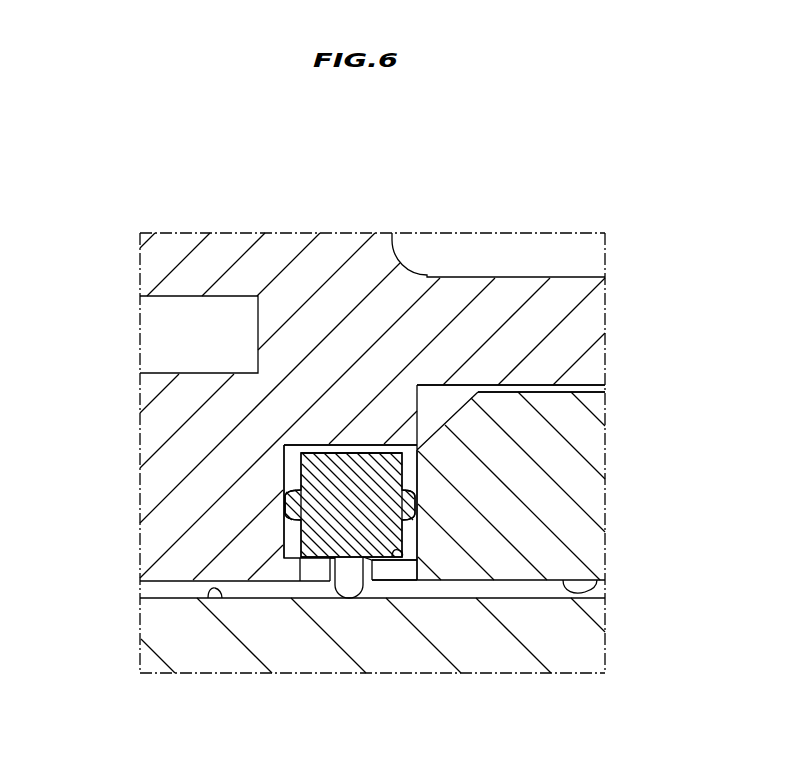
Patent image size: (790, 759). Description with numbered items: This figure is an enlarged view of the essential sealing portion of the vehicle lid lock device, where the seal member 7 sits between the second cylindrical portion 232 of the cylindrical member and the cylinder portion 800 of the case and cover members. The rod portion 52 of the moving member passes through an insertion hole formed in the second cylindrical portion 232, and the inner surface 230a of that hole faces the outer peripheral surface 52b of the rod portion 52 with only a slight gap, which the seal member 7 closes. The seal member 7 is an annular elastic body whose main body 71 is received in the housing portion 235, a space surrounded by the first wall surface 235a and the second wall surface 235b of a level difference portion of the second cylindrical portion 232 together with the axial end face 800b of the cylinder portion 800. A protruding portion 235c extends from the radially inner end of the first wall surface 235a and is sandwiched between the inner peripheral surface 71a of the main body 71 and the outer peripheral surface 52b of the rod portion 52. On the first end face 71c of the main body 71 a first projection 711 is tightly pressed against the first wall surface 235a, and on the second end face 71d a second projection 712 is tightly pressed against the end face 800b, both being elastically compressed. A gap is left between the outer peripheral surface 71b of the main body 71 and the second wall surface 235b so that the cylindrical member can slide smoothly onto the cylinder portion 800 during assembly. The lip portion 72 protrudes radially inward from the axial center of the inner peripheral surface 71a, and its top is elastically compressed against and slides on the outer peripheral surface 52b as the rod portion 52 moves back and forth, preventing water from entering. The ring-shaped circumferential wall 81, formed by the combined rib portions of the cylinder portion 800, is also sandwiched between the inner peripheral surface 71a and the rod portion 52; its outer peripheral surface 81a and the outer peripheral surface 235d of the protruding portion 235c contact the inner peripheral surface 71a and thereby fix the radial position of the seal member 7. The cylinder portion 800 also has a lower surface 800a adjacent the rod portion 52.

The seal member 7 is at (392, 444).
The main body 71 is at (300, 468).
The inner peripheral surface 71a is at (388, 560).
The outer peripheral surface 71b is at (330, 497).
The first end face 71c is at (288, 462).
The second end face 71d is at (402, 455).
The first projection 711 is at (296, 500).
The second projection 712 is at (548, 385).
The lip portion 72 is at (360, 585).
The circumferential wall 81 is at (400, 573).
The outer peripheral surface 81a is at (430, 580).
The second cylindrical portion 232 is at (175, 520).
The inner surface 230a is at (183, 581).
The housing portion 235 is at (282, 542).
The first wall surface 235a is at (288, 522).
The second wall surface 235b is at (345, 447).
The protruding portion 235c is at (322, 586).
The outer peripheral surface 235d is at (305, 565).
The rod portion 52 is at (587, 638).
The outer peripheral surface 52b is at (212, 600).
The cylinder portion 800 is at (568, 526).
The bottom portion of cover member 800a is at (565, 592).
The end face 800b is at (417, 525).